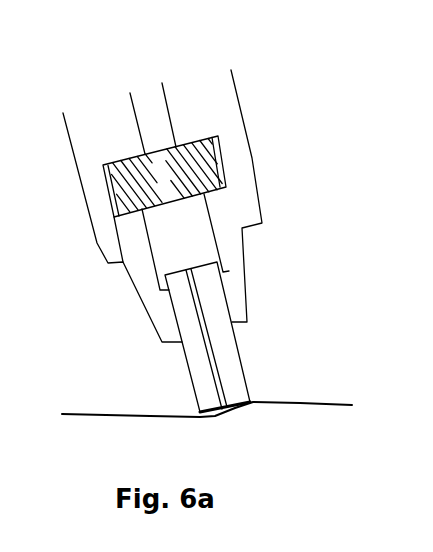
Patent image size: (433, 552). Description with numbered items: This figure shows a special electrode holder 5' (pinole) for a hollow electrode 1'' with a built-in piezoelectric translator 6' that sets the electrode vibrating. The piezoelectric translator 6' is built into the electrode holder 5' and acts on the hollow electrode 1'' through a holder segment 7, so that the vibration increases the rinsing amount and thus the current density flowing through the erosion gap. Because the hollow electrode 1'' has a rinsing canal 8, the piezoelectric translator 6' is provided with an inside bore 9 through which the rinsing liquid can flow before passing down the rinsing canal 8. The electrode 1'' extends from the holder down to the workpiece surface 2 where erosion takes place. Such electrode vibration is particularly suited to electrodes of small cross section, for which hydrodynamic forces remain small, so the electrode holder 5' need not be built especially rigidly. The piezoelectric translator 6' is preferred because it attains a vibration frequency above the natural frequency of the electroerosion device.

The electrode holder 5' is at (189, 204).
The inside bore 9 is at (165, 160).
The piezoelectric translator 6' is at (291, 200).
The holder segment 7 is at (233, 263).
The rinsing canal 8 is at (207, 343).
The hollow electrode 1'' is at (174, 382).
The surface 2 is at (207, 426).